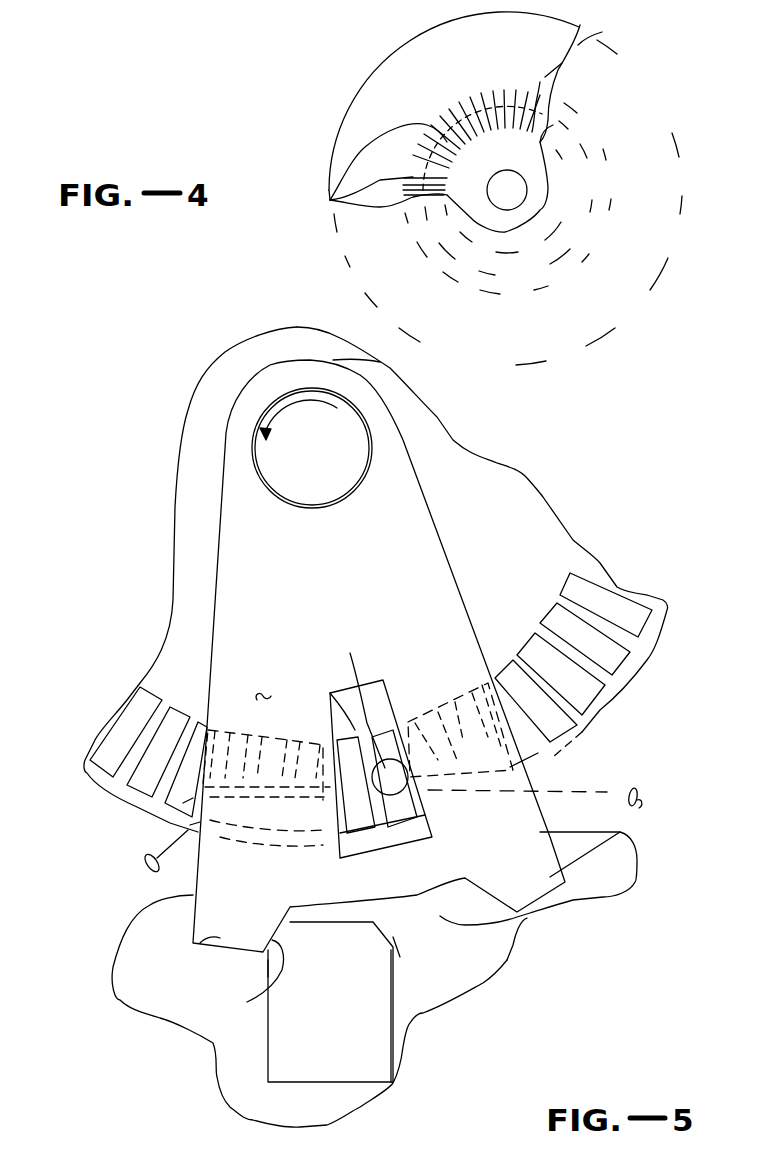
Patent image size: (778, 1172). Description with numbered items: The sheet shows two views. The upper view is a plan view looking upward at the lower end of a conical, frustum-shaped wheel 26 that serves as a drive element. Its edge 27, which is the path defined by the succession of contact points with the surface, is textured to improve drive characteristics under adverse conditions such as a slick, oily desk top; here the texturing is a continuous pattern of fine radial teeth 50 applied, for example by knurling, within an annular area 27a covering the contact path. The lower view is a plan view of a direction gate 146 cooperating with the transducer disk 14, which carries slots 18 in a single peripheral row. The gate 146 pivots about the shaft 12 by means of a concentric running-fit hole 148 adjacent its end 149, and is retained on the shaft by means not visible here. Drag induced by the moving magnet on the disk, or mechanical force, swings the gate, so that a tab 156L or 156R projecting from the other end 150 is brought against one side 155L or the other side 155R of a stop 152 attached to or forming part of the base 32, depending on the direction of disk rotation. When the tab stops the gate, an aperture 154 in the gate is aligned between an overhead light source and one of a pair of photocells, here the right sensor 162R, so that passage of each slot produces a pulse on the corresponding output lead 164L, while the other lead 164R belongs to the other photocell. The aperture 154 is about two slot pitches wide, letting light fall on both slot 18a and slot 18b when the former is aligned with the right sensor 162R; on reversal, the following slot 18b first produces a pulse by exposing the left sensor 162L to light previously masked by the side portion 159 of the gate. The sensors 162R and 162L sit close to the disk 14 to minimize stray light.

In FIG. 4, the shaft 12 is at (512, 197).
In FIG. 5, the shaft 12 is at (352, 434).
In FIG. 5, the transducer disk 14 is at (547, 550).
In FIG. 5, the slots 18 is at (150, 780).
In FIG. 5, the slot 18a is at (350, 653).
In FIG. 5, the slot 18b is at (330, 693).
In FIG. 4, the frustum-shaped wheel 26 is at (380, 87).
In FIG. 4, the edge 27 is at (620, 30).
In FIG. 4, the annular area 27a is at (553, 125).
In FIG. 5, the base 32 is at (527, 918).
In FIG. 4, the fine radial teeth 50 is at (330, 200).
In FIG. 5, the direction gate 146 is at (415, 513).
In FIG. 5, the running-fit hole 148 is at (357, 407).
In FIG. 5, the end of gate 149 is at (333, 360).
In FIG. 5, the other end of gate 150 is at (635, 882).
In FIG. 5, the stop 152 is at (288, 1072).
In FIG. 5, the aperture 154 is at (410, 781).
In FIG. 5, the side of stop 155L is at (268, 977).
In FIG. 5, the side of stop 155R is at (400, 957).
In FIG. 5, the tab 156L is at (197, 945).
In FIG. 5, the tab 156R is at (620, 832).
In FIG. 5, the side portion of gate 159 is at (257, 700).
In FIG. 5, the left sensor 162L is at (143, 818).
In FIG. 5, the right sensor 162R is at (413, 807).
In FIG. 5, the output lead 164L is at (140, 880).
In FIG. 5, the output lead 164R is at (637, 792).